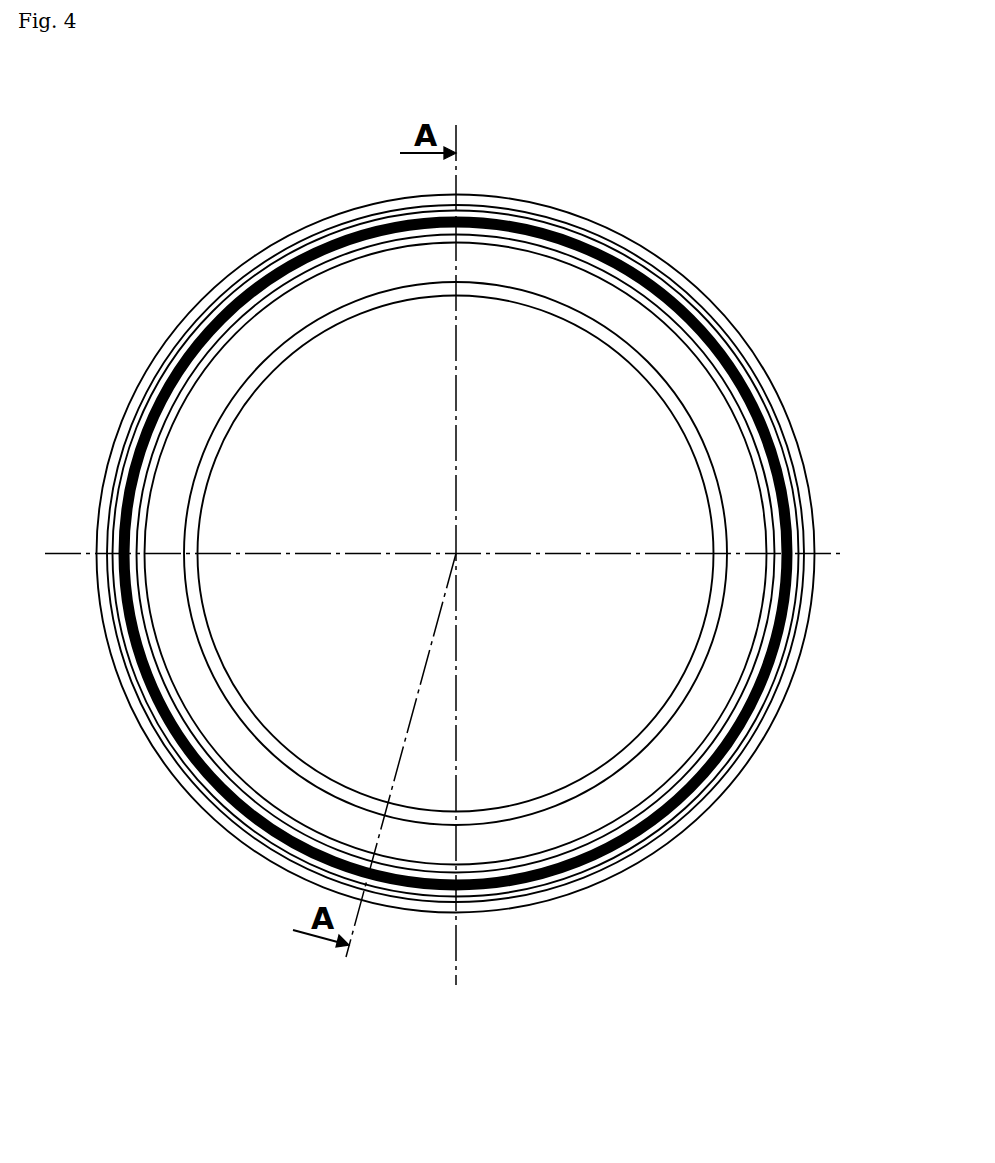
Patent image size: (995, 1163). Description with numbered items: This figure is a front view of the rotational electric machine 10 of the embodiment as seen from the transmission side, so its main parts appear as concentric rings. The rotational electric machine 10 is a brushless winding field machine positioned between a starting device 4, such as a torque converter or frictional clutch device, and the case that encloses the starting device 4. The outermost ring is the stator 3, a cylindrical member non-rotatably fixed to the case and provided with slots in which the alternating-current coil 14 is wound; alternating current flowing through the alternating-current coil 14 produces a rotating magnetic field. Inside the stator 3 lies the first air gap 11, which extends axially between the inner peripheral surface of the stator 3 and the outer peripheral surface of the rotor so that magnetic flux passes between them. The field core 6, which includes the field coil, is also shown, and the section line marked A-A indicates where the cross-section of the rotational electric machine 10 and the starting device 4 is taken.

The stator 3 is at (781, 404).
The starting device 4 is at (682, 520).
The field core 6 is at (583, 288).
The rotational electric machine 10 is at (560, 208).
The first air gap 11 is at (670, 320).
The alternating-current coil 14 is at (733, 365).